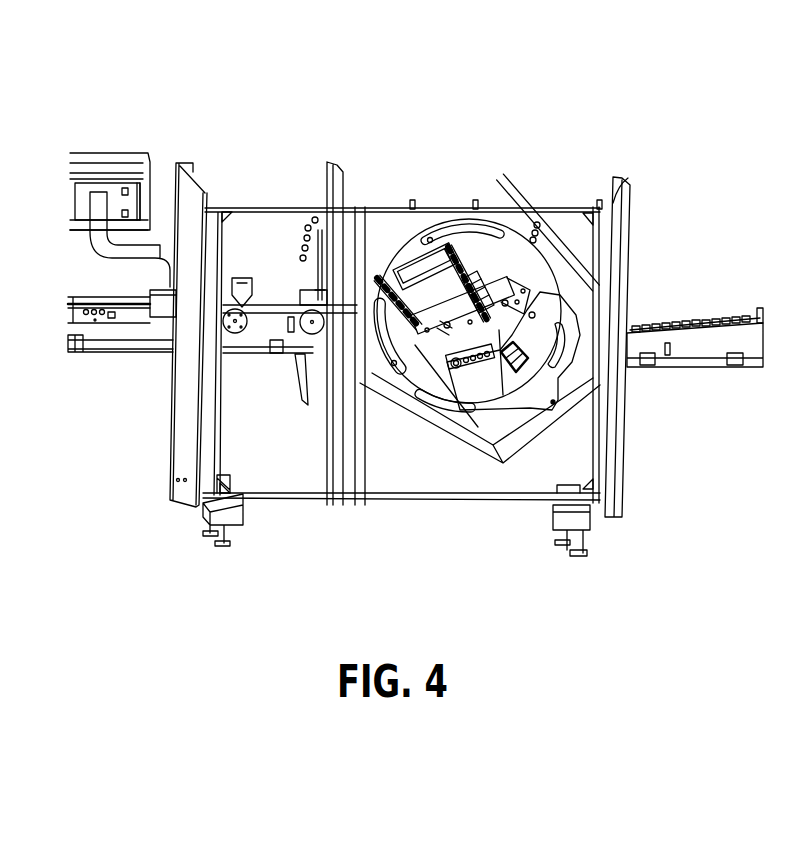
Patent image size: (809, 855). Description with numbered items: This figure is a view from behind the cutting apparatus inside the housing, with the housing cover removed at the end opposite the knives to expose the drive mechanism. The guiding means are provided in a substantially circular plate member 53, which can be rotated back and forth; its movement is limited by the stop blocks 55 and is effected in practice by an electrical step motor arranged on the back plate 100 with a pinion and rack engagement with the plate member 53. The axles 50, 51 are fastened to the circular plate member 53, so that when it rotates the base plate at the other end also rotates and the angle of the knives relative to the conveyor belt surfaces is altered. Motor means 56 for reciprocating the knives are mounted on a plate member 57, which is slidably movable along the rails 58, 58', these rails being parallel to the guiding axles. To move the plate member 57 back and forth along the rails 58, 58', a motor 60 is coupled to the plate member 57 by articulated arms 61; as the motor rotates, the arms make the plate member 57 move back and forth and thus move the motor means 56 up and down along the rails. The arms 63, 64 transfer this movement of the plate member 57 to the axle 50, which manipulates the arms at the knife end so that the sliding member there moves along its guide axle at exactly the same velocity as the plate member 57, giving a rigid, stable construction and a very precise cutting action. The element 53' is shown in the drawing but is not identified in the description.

The back plate 100 is at (432, 466).
The axle 50 is at (497, 357).
The axle 51 is at (475, 388).
The circular plate member 53 is at (548, 194).
The guide frame 53' is at (431, 166).
The stop blocks 55 is at (452, 248).
The motor means 56 is at (508, 300).
The plate member 57 is at (505, 303).
The rail 58 is at (393, 181).
The rail 58' is at (499, 197).
The motor 60 is at (527, 352).
The articulated arm 61 is at (532, 315).
The arm 63 is at (502, 398).
The arm 64 is at (577, 553).